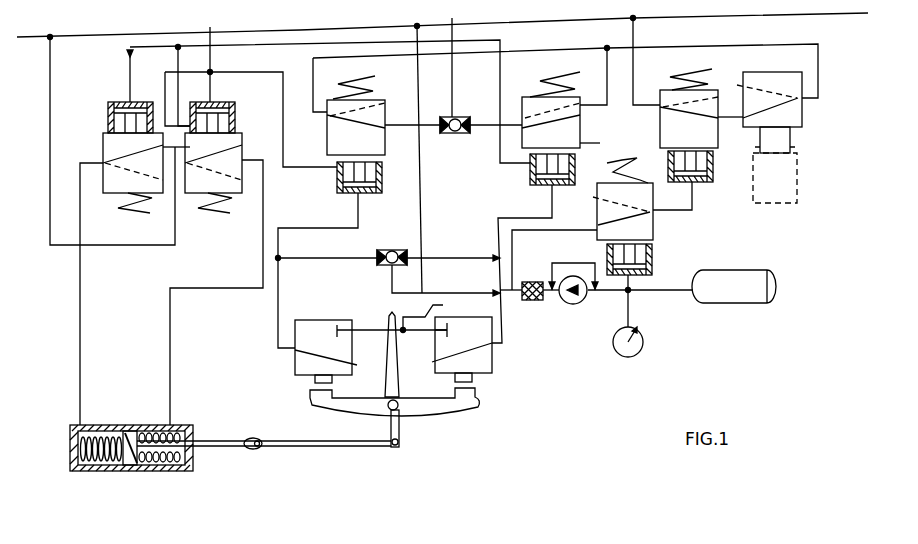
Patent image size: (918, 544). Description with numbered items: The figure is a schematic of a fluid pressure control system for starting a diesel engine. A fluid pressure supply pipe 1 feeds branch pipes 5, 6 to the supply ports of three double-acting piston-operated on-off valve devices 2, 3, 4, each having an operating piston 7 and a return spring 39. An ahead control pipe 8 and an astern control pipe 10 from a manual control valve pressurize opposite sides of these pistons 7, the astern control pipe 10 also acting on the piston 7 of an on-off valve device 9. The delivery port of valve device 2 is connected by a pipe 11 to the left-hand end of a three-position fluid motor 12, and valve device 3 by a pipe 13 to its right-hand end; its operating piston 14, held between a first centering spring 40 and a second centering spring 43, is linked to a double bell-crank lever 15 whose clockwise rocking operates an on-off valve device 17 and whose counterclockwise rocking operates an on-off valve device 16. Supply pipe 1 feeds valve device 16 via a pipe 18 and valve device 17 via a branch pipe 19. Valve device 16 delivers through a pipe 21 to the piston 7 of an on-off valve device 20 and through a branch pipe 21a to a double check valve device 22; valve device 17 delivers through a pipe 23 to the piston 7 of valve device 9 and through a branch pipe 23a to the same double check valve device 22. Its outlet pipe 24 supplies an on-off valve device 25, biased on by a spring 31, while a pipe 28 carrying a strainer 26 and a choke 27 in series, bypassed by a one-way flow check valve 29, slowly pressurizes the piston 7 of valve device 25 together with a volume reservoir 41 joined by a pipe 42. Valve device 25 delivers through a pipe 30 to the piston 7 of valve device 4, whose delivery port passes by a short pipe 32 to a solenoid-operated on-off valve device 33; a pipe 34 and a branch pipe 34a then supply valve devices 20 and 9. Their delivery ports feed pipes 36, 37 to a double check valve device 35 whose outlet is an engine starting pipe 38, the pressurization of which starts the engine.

The fluid pressure supply pipe 1 is at (521, 23).
The on-off valve device 2 is at (102, 145).
The on-off valve device 3 is at (246, 143).
The on-off valve device 4 is at (644, 117).
The branch pipe 5 is at (50, 106).
The branch pipe 6 is at (640, 34).
The operating piston 7 is at (108, 108).
The ahead control pipe 8 is at (177, 48).
The on-off valve device 9 is at (318, 127).
The astern control pipe 10 is at (165, 90).
The pipe 11 is at (82, 314).
The three-position fluid motor 12 is at (128, 478).
The pipe 13 is at (170, 318).
The operating piston 14 is at (134, 432).
The double bell-crank lever 15 is at (322, 412).
The on-off valve device 16 is at (502, 355).
The on-off valve device 17 is at (290, 367).
The pipe 18 is at (408, 316).
The branch pipe 19 is at (375, 327).
The on-off valve device 20 is at (600, 143).
The pipe 21 is at (504, 341).
The branch pipe 21a is at (472, 257).
The double check valve device 22 is at (382, 231).
The pipe 23 is at (278, 321).
The branch pipe 23a is at (329, 258).
The pipe 24 is at (468, 290).
The on-off valve device 25 is at (668, 232).
The strainer 26 is at (539, 310).
The choke 27 is at (571, 259).
The pipe 28 is at (522, 268).
The one-way flow check valve 29 is at (576, 302).
The pipe 30 is at (680, 211).
The spring 31 is at (613, 163).
The short pipe 32 is at (737, 133).
The solenoid-operated on-off valve device 33 is at (812, 120).
The pipe 34 is at (605, 80).
The branch pipe 34a is at (556, 50).
The double check valve device 35 is at (442, 134).
The pipe 36 is at (415, 128).
The pipe 37 is at (478, 128).
The engine starting pipe 38 is at (453, 67).
The return spring 39 is at (123, 214).
The first centering spring 40 is at (97, 431).
The volume reservoir 41 is at (770, 301).
The pipe 42 is at (648, 297).
The second centering spring 43 is at (167, 462).